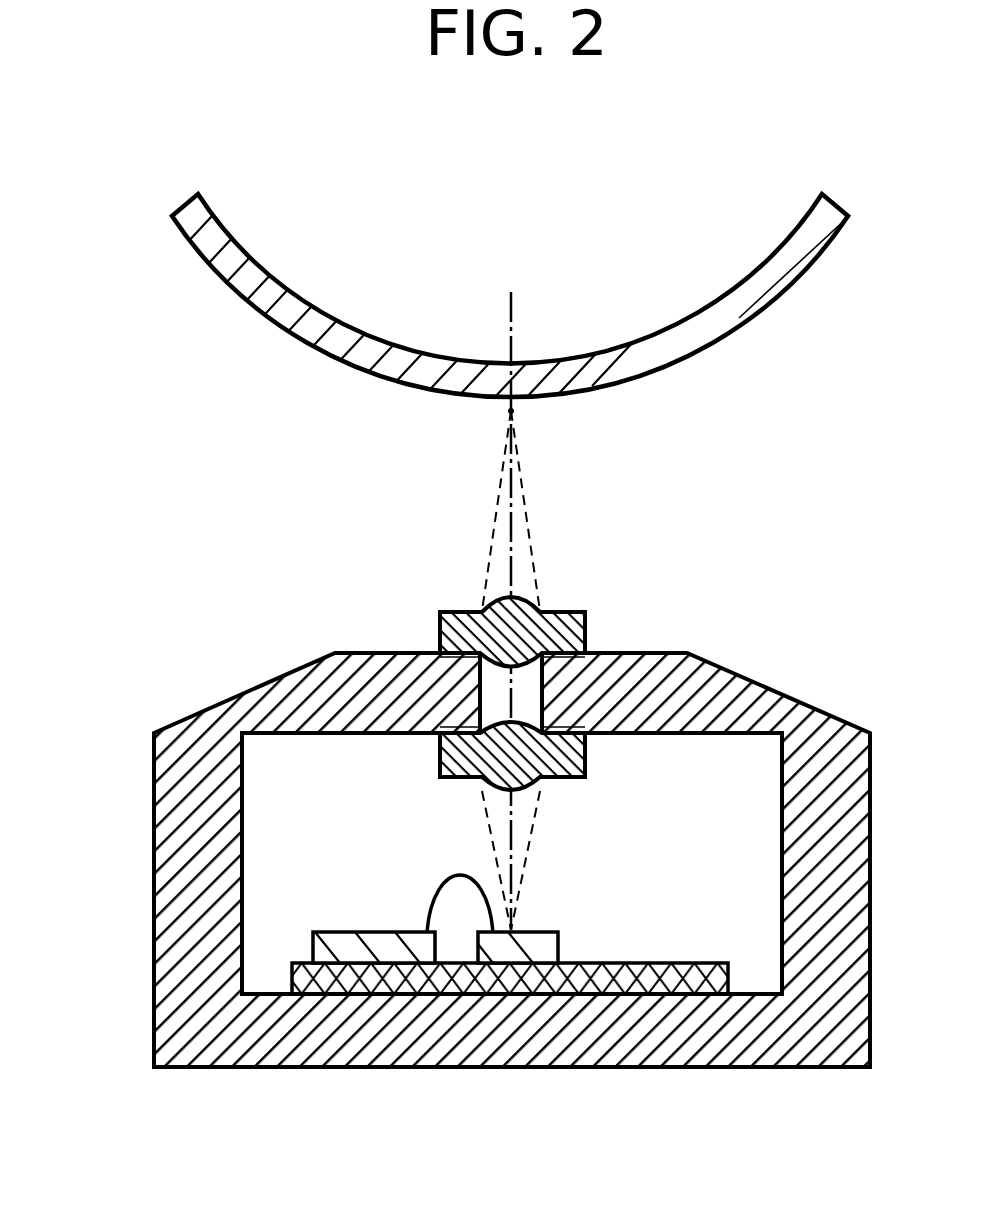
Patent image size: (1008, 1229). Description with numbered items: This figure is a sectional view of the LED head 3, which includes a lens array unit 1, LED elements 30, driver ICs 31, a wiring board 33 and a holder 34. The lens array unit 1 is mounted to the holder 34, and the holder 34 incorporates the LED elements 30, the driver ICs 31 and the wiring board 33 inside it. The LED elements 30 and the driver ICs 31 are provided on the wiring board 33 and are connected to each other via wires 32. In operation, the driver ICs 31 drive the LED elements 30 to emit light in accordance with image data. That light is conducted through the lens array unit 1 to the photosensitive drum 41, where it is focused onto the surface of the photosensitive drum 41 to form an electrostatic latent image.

The lens array unit 1 is at (573, 610).
The LED head 3 is at (237, 620).
The LED elements 30 is at (538, 947).
The driver ICs 31 is at (313, 940).
The wires 32 is at (443, 893).
The wiring board 33 is at (292, 977).
The holder 34 is at (798, 702).
The photosensitive drum 41 is at (783, 295).